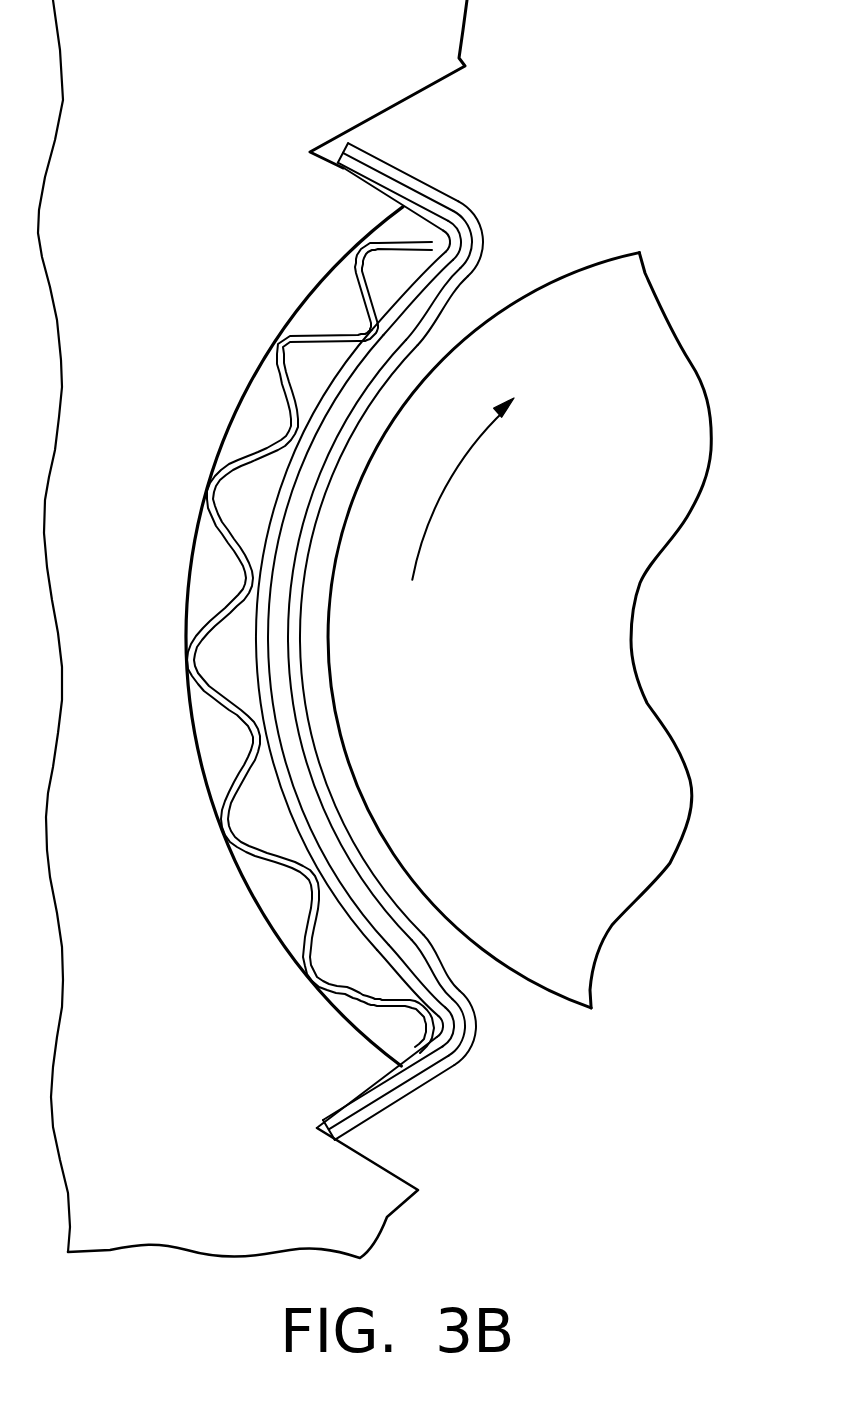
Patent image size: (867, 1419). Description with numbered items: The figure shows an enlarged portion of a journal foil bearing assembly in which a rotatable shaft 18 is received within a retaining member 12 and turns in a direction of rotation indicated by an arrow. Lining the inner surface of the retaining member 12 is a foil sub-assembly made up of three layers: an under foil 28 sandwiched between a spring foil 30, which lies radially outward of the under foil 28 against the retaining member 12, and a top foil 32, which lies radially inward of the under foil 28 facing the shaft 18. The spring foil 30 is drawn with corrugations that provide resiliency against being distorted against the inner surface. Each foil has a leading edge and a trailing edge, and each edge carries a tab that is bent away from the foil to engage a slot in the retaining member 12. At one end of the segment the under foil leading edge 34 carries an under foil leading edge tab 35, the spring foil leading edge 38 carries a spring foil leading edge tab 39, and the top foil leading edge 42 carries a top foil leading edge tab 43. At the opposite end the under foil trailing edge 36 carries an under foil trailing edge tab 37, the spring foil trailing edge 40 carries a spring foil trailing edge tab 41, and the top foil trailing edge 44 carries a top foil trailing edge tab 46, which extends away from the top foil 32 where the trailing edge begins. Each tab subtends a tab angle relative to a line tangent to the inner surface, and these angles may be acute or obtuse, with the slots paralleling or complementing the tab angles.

The retaining member 12 is at (146, 322).
The rotatable shaft 18 is at (442, 500).
The under foil 28 is at (268, 538).
The spring foil 30 is at (250, 603).
The top foil 32 is at (295, 650).
The under foil leading edge 34 is at (463, 1030).
The under foil leading edge tab 35 is at (365, 1118).
The under foil trailing edge 36 is at (462, 235).
The under foil trailing edge tab 37 is at (375, 163).
The spring foil leading edge 38 is at (430, 1020).
The spring foil leading edge tab 39 is at (362, 1100).
The spring foil trailing edge 40 is at (433, 242).
The spring foil trailing edge tab 41 is at (347, 170).
The top foil leading edge 42 is at (473, 1038).
The top foil leading edge tab 43 is at (400, 1103).
The top foil trailing edge 44 is at (480, 257).
The top foil trailing edge tab 46 is at (423, 187).